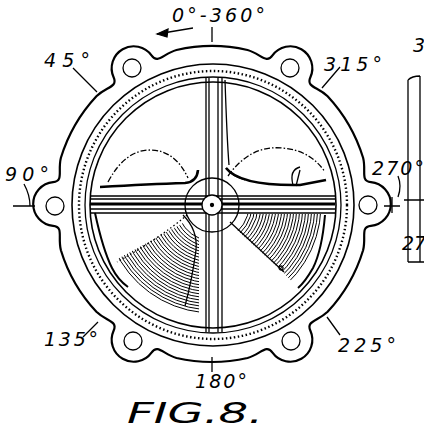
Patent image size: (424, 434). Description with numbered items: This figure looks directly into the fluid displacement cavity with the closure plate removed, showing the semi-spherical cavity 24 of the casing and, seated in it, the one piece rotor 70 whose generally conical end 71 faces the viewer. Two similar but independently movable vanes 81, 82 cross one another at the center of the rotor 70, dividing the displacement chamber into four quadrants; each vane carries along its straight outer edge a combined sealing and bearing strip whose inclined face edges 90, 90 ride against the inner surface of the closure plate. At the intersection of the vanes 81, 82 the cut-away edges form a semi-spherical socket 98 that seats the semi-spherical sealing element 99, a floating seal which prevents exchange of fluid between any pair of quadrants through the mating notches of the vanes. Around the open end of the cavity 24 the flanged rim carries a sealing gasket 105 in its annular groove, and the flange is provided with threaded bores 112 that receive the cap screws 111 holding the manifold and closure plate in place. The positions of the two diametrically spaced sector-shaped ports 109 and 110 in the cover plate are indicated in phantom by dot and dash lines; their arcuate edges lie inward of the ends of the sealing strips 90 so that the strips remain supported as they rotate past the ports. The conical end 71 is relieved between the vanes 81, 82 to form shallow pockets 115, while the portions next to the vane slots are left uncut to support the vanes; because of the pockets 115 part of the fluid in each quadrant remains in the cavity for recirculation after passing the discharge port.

The semi-spherical cavity 24 is at (322, 264).
The rotor 70 is at (212, 181).
The conical end 71 is at (227, 172).
The vane 81 is at (222, 122).
The vane 82 is at (136, 213).
The face edges of sealing strip 90 is at (204, 97).
The semi-spherical socket 98 is at (283, 172).
The sealing element 99 is at (282, 268).
The sealing gasket 105 is at (90, 277).
The sector-shaped port 109 is at (282, 268).
The sector-shaped port 110 is at (128, 259).
The cap screw 111 is at (127, 58).
The threaded bore 112 is at (294, 351).
The shallow pocket 115 is at (362, 152).